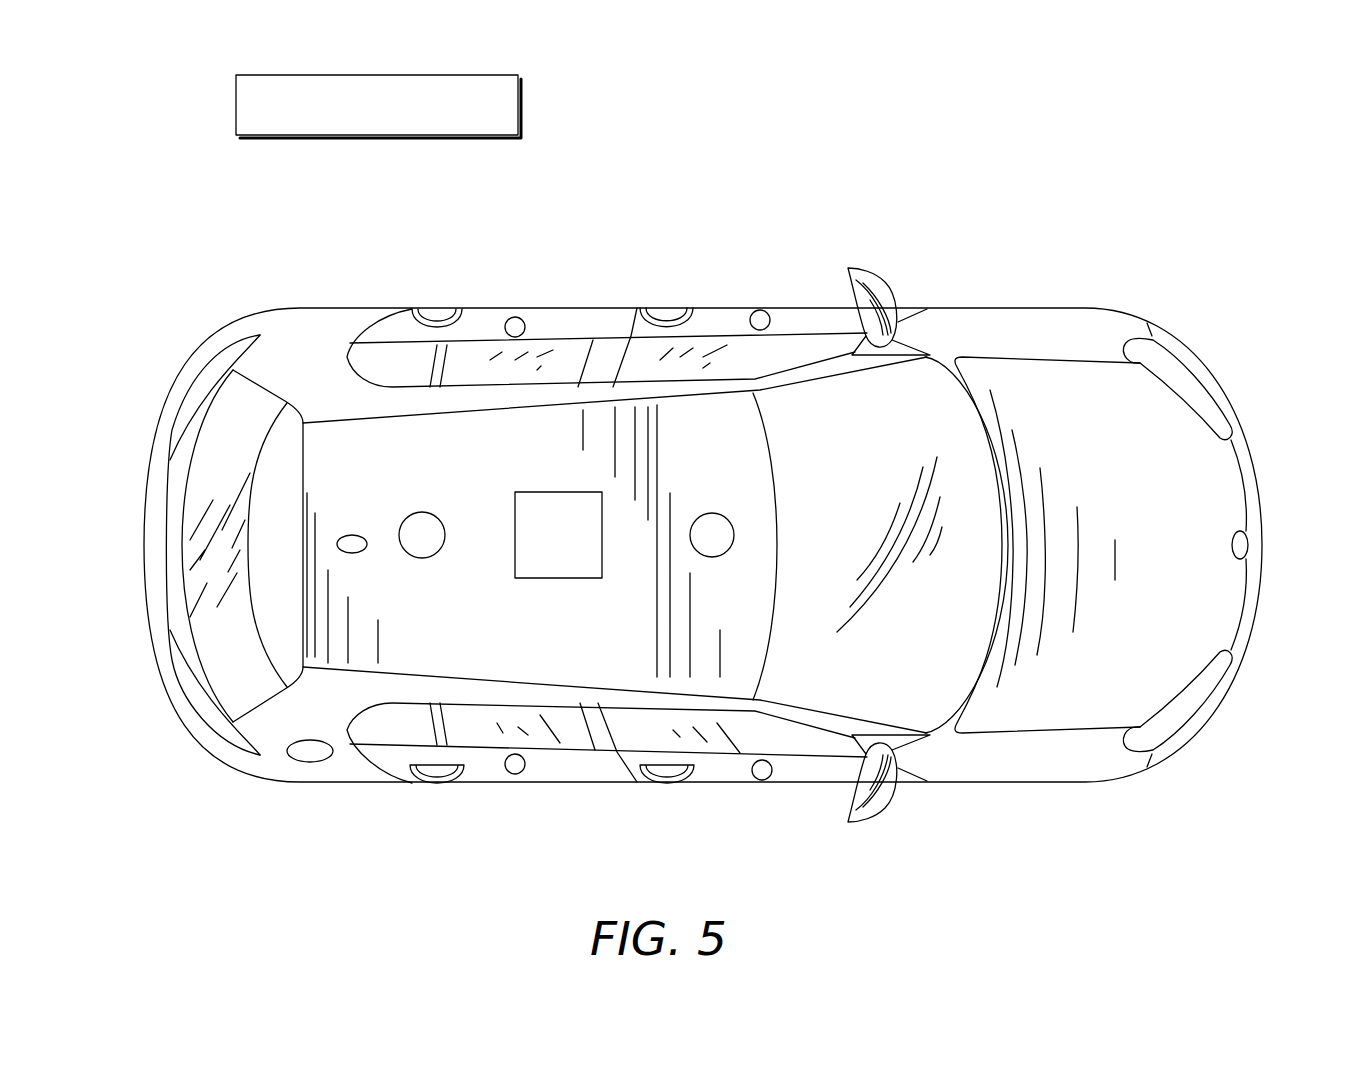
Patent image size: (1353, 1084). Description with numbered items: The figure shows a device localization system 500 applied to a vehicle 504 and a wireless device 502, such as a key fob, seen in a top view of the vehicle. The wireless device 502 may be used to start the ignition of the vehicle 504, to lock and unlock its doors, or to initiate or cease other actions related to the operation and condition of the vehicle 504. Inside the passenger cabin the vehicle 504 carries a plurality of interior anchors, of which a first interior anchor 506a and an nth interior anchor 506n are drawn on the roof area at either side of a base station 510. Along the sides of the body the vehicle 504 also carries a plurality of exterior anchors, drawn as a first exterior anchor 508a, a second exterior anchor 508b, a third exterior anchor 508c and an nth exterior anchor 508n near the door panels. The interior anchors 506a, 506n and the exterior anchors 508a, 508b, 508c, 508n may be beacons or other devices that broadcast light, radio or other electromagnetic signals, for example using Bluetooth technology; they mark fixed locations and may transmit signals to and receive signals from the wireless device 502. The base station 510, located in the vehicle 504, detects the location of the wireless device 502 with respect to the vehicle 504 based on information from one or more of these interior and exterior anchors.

The device localization system 500 is at (1062, 180).
The wireless device 502 is at (307, 75).
The vehicle 504 is at (986, 307).
The interior anchor 506a is at (420, 527).
The interior anchor 506n is at (710, 527).
The exterior anchor 508a is at (754, 313).
The exterior anchor 508b is at (510, 318).
The exterior anchor 508c is at (510, 773).
The exterior anchor 508n is at (754, 777).
The base station 510 is at (568, 565).